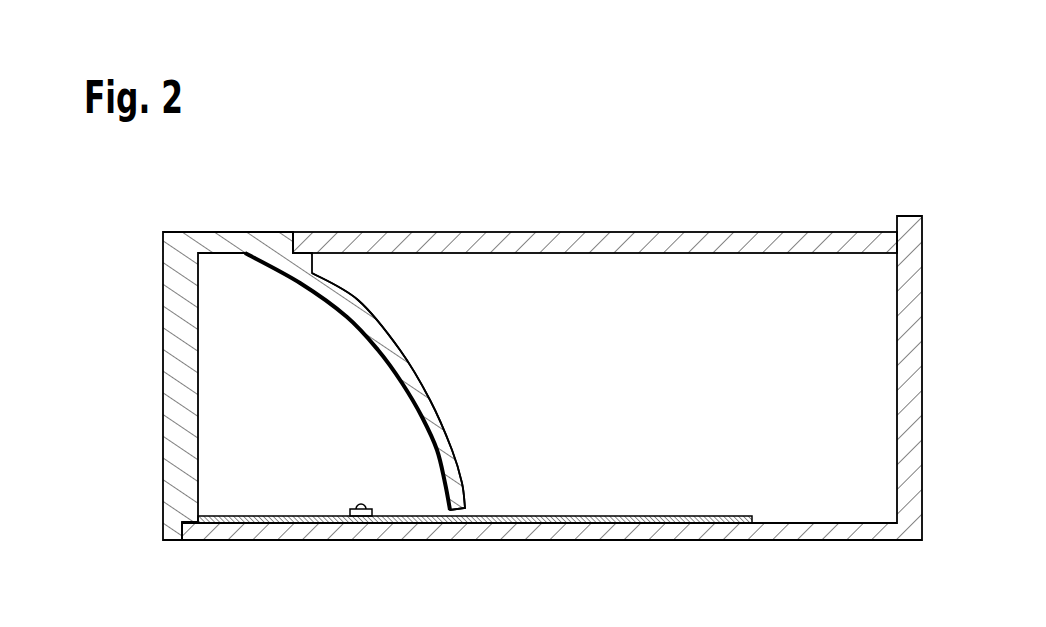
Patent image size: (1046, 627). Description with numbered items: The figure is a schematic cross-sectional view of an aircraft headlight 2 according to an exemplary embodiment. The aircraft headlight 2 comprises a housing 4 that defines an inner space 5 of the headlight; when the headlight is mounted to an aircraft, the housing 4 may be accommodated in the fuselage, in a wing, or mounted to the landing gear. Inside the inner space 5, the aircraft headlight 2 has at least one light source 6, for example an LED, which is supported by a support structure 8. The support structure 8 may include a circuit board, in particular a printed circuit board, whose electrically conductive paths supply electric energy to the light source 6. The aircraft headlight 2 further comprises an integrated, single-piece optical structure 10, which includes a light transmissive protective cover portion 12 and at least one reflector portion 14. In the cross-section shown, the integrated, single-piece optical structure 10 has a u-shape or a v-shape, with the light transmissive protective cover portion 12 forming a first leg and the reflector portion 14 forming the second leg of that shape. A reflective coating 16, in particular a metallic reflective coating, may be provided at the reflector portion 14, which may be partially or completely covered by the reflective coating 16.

The aircraft headlight 2 is at (527, 190).
The housing 4 is at (705, 245).
The inner space 5 is at (767, 320).
The light source 6 is at (346, 499).
The support structure 8 is at (662, 523).
The integrated, single-piece optical structure 10 is at (264, 213).
The light transmissive protective cover portion 12 is at (153, 414).
The reflector portion 14 is at (338, 325).
The reflective coating 16 is at (403, 383).